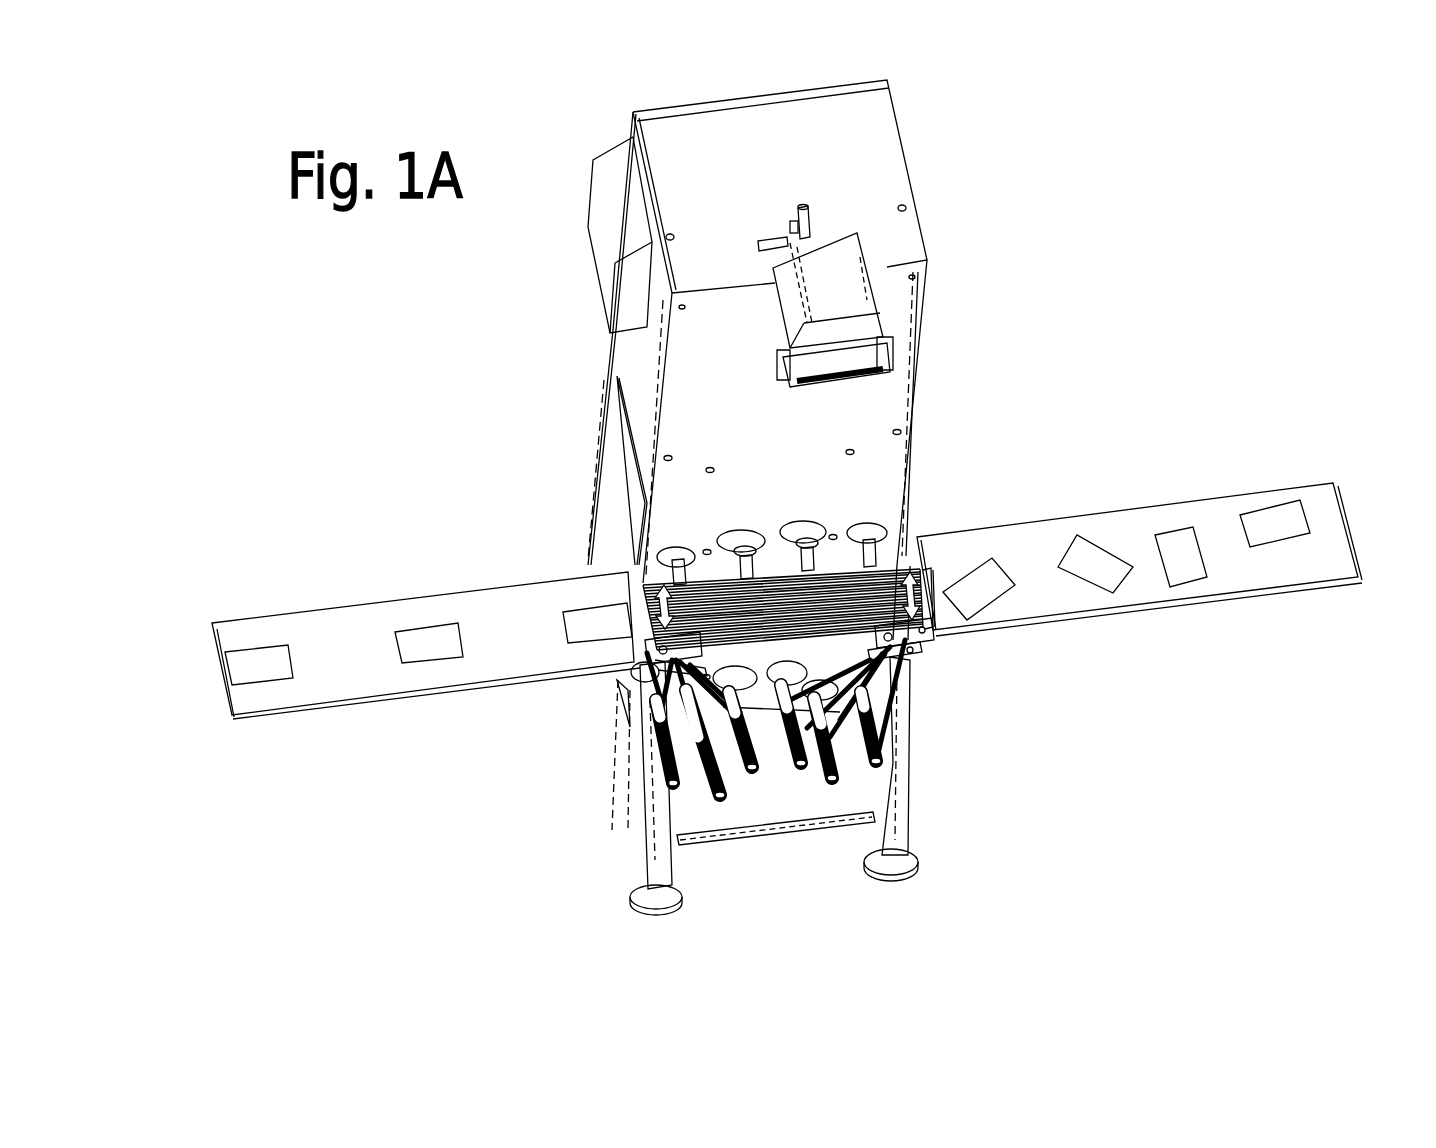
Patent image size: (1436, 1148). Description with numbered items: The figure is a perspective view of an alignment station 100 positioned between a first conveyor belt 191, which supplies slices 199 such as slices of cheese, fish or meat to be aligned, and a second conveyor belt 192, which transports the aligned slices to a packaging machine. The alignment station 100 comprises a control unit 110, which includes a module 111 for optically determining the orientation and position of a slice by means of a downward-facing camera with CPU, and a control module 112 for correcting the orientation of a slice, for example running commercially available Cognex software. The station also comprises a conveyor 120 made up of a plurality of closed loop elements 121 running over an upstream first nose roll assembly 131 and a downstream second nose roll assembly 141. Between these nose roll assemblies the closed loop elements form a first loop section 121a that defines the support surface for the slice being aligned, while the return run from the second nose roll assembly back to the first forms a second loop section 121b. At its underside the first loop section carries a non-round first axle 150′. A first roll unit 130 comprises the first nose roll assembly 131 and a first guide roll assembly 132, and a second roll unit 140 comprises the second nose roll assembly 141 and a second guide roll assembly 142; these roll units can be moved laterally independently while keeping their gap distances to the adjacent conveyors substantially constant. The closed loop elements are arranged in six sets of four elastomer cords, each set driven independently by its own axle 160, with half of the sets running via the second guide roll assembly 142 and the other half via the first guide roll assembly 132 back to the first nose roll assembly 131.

The alignment station 100 is at (1037, 260).
The control unit 110 is at (615, 360).
The module for optically determining the orientation and position of slices 111 is at (838, 305).
The control module 112 is at (617, 215).
The conveyor 120 is at (880, 562).
The closed loop elements 121 is at (918, 648).
The first loop section 121a is at (660, 652).
The second loop section 121b is at (863, 758).
The first roll unit 130 is at (908, 635).
The first nose roll assembly 131 is at (927, 617).
The first guide roll assembly 132 is at (905, 643).
The second roll unit 140 is at (655, 660).
The second nose roll assembly 141 is at (653, 657).
The second guide roll assembly 142 is at (690, 693).
The first axle 150′ is at (941, 446).
The axle 160 is at (883, 767).
The first conveyor belt 191 is at (1237, 577).
The second conveyor belt 192 is at (332, 625).
The slices 199 is at (1178, 540).